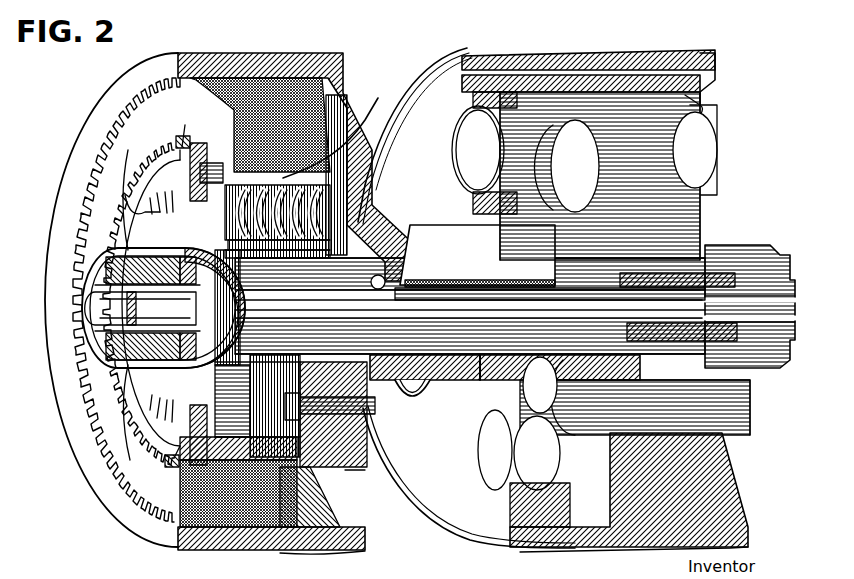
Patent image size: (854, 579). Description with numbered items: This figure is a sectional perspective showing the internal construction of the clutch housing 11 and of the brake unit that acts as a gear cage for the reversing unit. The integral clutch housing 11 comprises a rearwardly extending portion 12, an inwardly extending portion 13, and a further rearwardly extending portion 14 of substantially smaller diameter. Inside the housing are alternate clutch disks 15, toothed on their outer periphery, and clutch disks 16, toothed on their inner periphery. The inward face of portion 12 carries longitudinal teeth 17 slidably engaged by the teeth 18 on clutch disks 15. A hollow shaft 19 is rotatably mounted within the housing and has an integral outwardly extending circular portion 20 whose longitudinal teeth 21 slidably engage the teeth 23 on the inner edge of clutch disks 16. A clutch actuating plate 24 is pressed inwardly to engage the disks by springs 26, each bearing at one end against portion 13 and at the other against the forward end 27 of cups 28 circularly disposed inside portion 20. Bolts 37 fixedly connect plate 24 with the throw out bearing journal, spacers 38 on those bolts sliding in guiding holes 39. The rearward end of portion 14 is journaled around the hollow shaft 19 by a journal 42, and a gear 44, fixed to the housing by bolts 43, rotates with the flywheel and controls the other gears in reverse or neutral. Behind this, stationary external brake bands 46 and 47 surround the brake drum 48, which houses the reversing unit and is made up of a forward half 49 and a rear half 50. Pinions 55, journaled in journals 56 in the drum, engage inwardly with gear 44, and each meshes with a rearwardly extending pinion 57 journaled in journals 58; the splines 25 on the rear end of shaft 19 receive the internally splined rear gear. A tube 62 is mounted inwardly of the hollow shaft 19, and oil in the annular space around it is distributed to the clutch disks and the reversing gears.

The clutch housing 11 is at (338, 548).
The rearwardly extending portion 12 is at (280, 548).
The inwardly extending portion 13 is at (365, 470).
The rearwardly extending portion 14 is at (450, 382).
The clutch disks 15 is at (232, 126).
The clutch disks 16 is at (178, 452).
The longitudinal teeth 17 is at (138, 100).
The teeth 18 is at (184, 125).
The hollow shaft 19 is at (300, 293).
The circular portion 20 is at (238, 432).
The teeth 21 is at (142, 462).
The teeth 23 is at (196, 170).
The clutch actuating plate 24 is at (318, 350).
The splines 25 is at (772, 248).
The springs 26 is at (316, 248).
The forward end 27 is at (248, 252).
The cups 28 is at (330, 131).
The bolts 37 is at (380, 438).
The spacers 38 is at (378, 416).
The guiding holes 39 is at (378, 388).
The journal 42 is at (472, 412).
The bolts 43 is at (372, 284).
The gear 44 is at (542, 270).
The brake band 46 is at (506, 52).
The brake band 47 is at (622, 52).
The brake drum 48 is at (441, 76).
The forward half 49 is at (472, 76).
The rear half 50 is at (712, 78).
The pinions 55 is at (586, 176).
The journals 56 is at (500, 482).
The pinion 57 is at (695, 137).
The journals 58 is at (460, 118).
The tube 62 is at (172, 318).